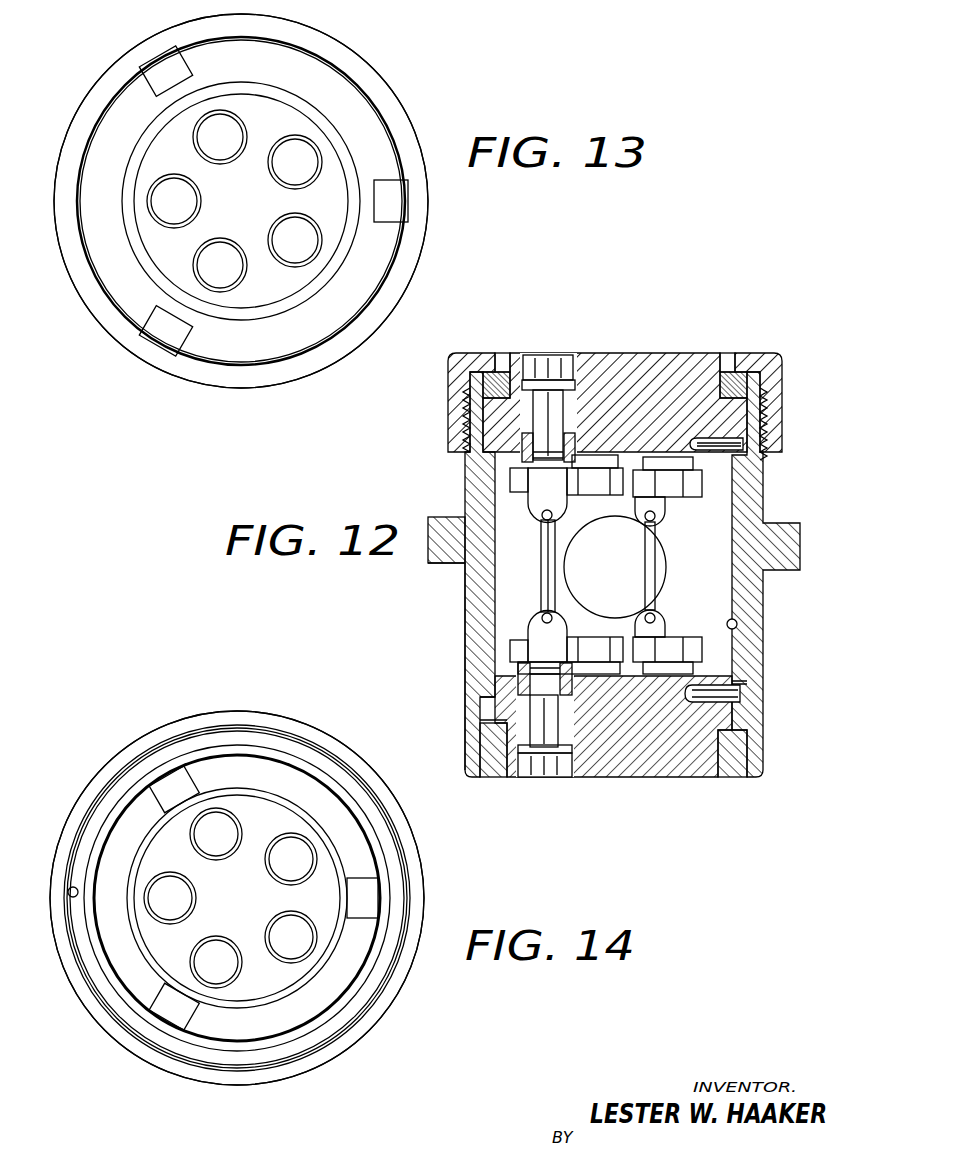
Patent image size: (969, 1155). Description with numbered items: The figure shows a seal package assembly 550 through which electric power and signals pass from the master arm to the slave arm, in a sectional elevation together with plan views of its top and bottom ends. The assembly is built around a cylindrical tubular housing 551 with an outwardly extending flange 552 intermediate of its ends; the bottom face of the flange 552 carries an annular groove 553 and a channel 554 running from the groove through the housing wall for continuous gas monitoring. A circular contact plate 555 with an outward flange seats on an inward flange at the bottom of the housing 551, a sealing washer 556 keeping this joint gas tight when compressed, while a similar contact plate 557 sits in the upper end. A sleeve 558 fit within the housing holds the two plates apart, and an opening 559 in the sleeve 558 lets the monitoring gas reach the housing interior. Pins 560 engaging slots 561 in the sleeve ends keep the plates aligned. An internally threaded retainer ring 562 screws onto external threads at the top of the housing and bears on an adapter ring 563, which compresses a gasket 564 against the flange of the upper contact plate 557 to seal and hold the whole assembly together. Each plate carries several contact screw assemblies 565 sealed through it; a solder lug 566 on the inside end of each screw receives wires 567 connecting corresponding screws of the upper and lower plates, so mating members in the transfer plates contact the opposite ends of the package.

In FIG. 13, the seal package assembly 550 is at (146, 372).
In FIG. 12, the seal package assembly 550 is at (458, 657).
In FIG. 14, the seal package assembly 550 is at (120, 742).
In FIG. 12, the cylindrical tubular housing 551 is at (470, 697).
In FIG. 14, the cylindrical tubular housing 551 is at (337, 967).
In FIG. 13, the outwardly extending flange 552 is at (395, 288).
In FIG. 12, the outwardly extending flange 552 is at (445, 521).
In FIG. 14, the outwardly extending flange 552 is at (375, 1020).
In FIG. 12, the annular groove 553 is at (478, 515).
In FIG. 14, the annular groove 553 is at (88, 822).
In FIG. 12, the channel 554 is at (452, 565).
In FIG. 14, the channel 554 is at (72, 898).
In FIG. 12, the circular contact plate 555 is at (686, 770).
In FIG. 14, the circular contact plate 555 is at (318, 885).
In FIG. 12, the sealing washer 556 is at (757, 742).
In FIG. 13, the contact plate 557 is at (287, 120).
In FIG. 12, the contact plate 557 is at (656, 366).
In FIG. 12, the sleeve 558 is at (738, 624).
In FIG. 12, the opening 559 is at (662, 563).
In FIG. 12, the pins 560 is at (741, 695).
In FIG. 12, the slots 561 is at (742, 684).
In FIG. 13, the internally threaded retainer ring 562 is at (375, 253).
In FIG. 12, the internally threaded retainer ring 562 is at (762, 355).
In FIG. 13, the adapter ring 563 is at (307, 295).
In FIG. 12, the adapter ring 563 is at (749, 382).
In FIG. 12, the gasket 564 is at (757, 400).
In FIG. 13, the contact screw assemblies 565 is at (220, 272).
In FIG. 12, the contact screw assemblies 565 is at (545, 362).
In FIG. 14, the contact screw assemblies 565 is at (218, 970).
In FIG. 12, the solder lug 566 is at (538, 628).
In FIG. 12, the wires 567 is at (542, 557).